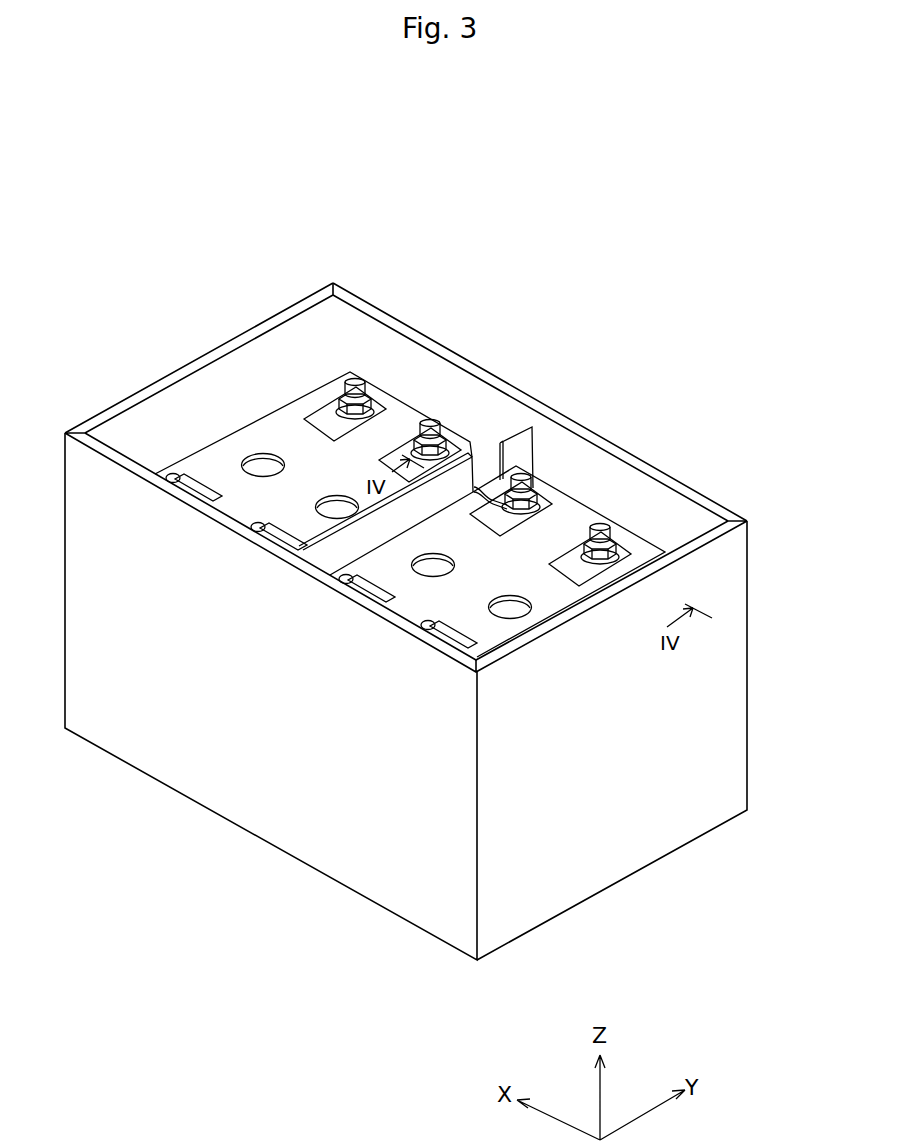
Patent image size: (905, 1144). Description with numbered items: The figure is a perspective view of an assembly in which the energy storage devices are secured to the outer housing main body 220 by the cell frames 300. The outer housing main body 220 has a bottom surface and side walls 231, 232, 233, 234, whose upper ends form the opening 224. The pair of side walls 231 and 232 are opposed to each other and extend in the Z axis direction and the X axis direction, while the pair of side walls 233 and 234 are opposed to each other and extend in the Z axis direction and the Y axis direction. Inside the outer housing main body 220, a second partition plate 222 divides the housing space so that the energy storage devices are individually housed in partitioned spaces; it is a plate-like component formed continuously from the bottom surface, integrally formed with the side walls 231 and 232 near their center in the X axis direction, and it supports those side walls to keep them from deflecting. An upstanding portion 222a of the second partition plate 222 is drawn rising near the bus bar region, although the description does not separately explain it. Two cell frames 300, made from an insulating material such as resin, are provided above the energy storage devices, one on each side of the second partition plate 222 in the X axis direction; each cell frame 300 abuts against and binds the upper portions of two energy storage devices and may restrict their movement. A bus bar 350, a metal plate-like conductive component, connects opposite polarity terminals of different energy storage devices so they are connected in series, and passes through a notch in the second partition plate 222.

The outer housing main body 220 is at (738, 577).
The second partition plate 222 is at (285, 551).
The partition tab 222a is at (497, 447).
The opening 224 is at (690, 495).
The side wall 231 is at (555, 435).
The side wall 232 is at (250, 752).
The side wall 233 is at (174, 405).
The side wall 234 is at (604, 840).
The cell frame 300 is at (404, 422).
The bus bar 350 is at (505, 467).